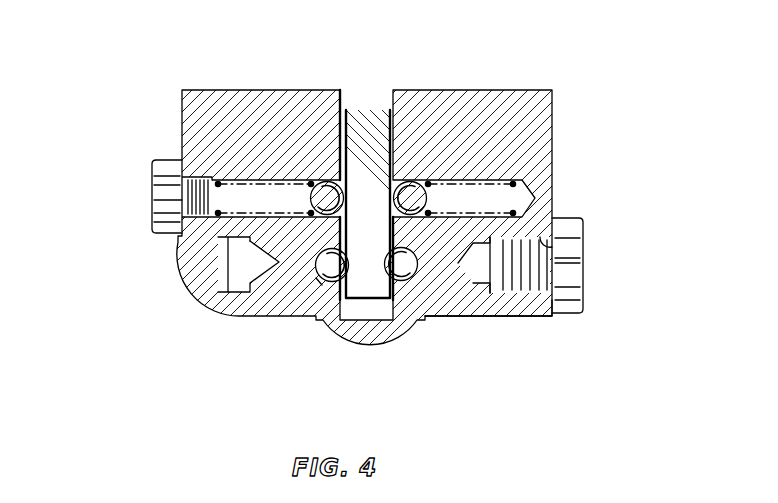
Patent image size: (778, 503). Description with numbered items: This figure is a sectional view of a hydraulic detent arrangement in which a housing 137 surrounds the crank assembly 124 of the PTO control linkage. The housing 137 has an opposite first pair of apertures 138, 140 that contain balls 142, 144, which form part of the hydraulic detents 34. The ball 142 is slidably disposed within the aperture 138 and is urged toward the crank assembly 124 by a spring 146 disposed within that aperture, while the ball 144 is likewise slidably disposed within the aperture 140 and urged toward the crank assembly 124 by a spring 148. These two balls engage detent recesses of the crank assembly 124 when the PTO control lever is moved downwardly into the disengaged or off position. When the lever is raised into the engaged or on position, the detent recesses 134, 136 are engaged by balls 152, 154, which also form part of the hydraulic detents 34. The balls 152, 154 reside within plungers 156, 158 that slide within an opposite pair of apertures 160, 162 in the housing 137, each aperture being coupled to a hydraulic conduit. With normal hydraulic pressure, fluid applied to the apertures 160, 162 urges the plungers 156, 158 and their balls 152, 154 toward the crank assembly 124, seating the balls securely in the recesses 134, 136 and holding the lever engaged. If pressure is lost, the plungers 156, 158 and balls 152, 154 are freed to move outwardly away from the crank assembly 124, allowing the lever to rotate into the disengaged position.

The hydraulic detents 34 is at (389, 213).
The crank assembly 124 is at (368, 112).
The detent recess 134 is at (403, 273).
The detent recess 136 is at (321, 278).
The housing 137 is at (550, 317).
The aperture 138 is at (478, 190).
The aperture 140 is at (258, 188).
The ball 142 is at (406, 192).
The ball 144 is at (322, 184).
The spring 146 is at (518, 182).
The spring 148 is at (222, 178).
The ball 152 is at (386, 258).
The ball 154 is at (316, 278).
The plunger 156 is at (488, 268).
The plunger 158 is at (278, 262).
The aperture 160 is at (556, 246).
The aperture 162 is at (262, 250).